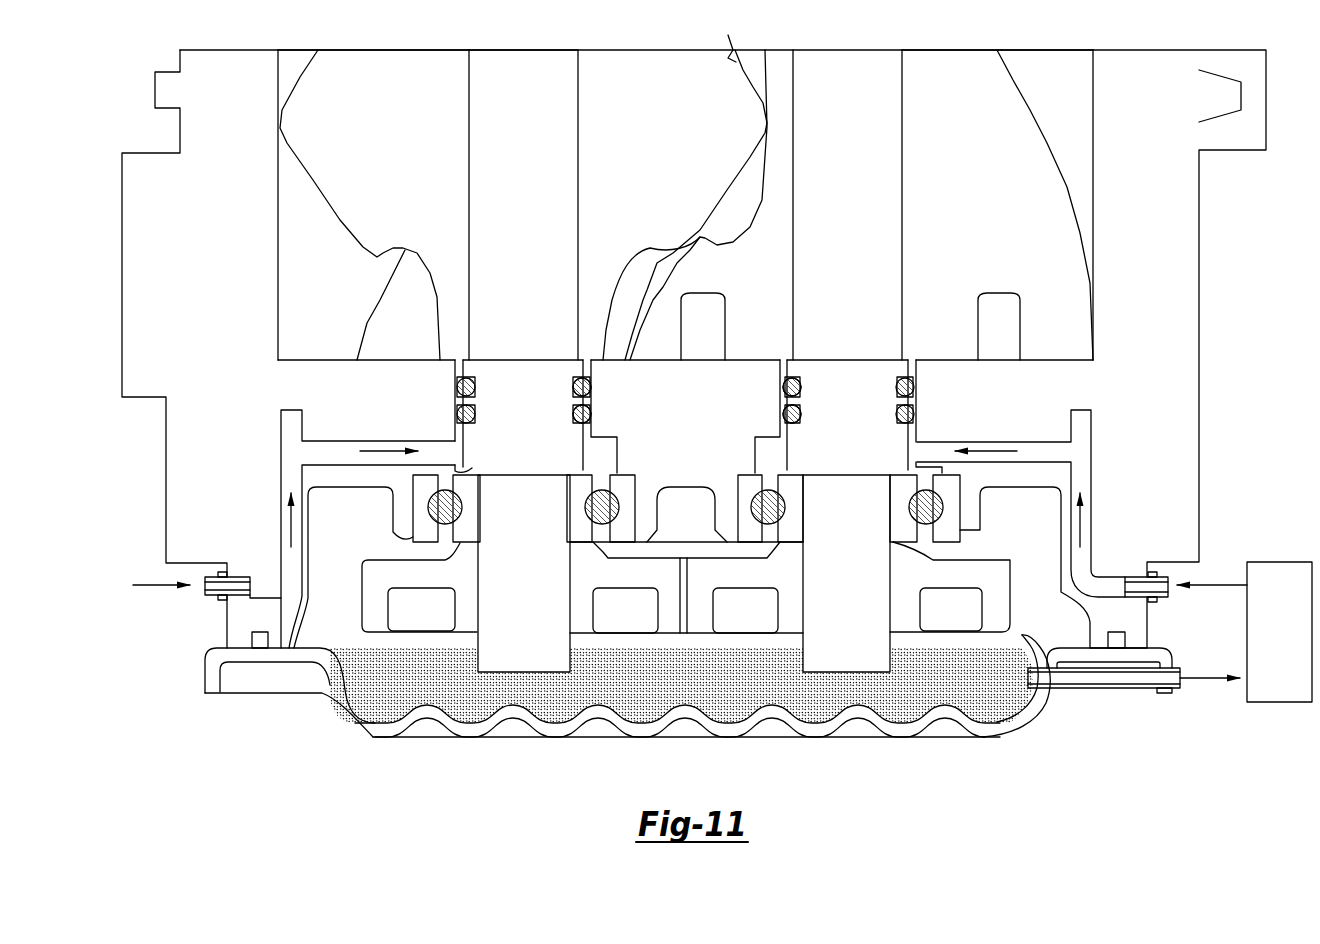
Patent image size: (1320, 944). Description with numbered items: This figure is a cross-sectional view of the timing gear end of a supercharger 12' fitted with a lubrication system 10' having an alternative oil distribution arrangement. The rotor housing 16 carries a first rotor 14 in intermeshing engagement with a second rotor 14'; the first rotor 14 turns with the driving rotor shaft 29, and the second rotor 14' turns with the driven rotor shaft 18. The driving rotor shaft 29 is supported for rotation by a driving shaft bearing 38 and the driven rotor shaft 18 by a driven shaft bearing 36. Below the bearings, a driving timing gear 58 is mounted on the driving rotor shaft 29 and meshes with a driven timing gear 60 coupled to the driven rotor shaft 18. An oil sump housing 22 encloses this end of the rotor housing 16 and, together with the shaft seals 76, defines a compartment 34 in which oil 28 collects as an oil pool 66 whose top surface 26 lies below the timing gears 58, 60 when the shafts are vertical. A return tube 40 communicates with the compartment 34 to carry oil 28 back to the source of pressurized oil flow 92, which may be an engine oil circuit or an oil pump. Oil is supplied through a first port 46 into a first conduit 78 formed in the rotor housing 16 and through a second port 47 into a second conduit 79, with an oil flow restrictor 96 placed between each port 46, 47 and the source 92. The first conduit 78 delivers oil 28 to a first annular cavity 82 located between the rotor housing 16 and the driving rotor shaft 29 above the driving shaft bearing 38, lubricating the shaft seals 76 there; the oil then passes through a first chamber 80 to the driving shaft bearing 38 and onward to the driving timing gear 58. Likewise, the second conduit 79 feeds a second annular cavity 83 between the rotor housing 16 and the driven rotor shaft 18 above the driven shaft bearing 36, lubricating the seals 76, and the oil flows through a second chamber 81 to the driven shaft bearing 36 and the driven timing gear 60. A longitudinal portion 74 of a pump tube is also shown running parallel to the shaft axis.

The lubrication system 10' is at (114, 653).
The supercharger 12' is at (742, 341).
The first rotor 14 is at (351, 180).
The second rotor 14' is at (997, 186).
The rotor housing 16 is at (118, 218).
The driven rotor shaft 18 is at (835, 60).
The oil sump housing 22 is at (905, 740).
The top surface 26 is at (1030, 637).
The oil 28 is at (737, 713).
The driving rotor shaft 29 is at (540, 60).
The compartment 34 is at (316, 612).
The driven shaft bearing 36 is at (958, 515).
The driving shaft bearing 38 is at (413, 515).
The return tube 40 is at (1183, 690).
The first port 46 is at (270, 577).
The second port 47 is at (1105, 577).
The driving timing gear 58 is at (362, 612).
The driven timing gear 60 is at (1010, 603).
The oil pool 66 is at (642, 700).
The longitudinal portion 74 is at (572, 387).
The shaft seals 76 is at (591, 387).
The first conduit 78 is at (275, 455).
The second conduit 79 is at (1098, 455).
The first chamber 80 is at (474, 467).
The second chamber 81 is at (912, 467).
The first annular cavity 82 is at (457, 437).
The second annular cavity 83 is at (916, 437).
The source of pressurized oil flow 92 is at (1270, 702).
The oil flow restrictor 96 is at (205, 590).